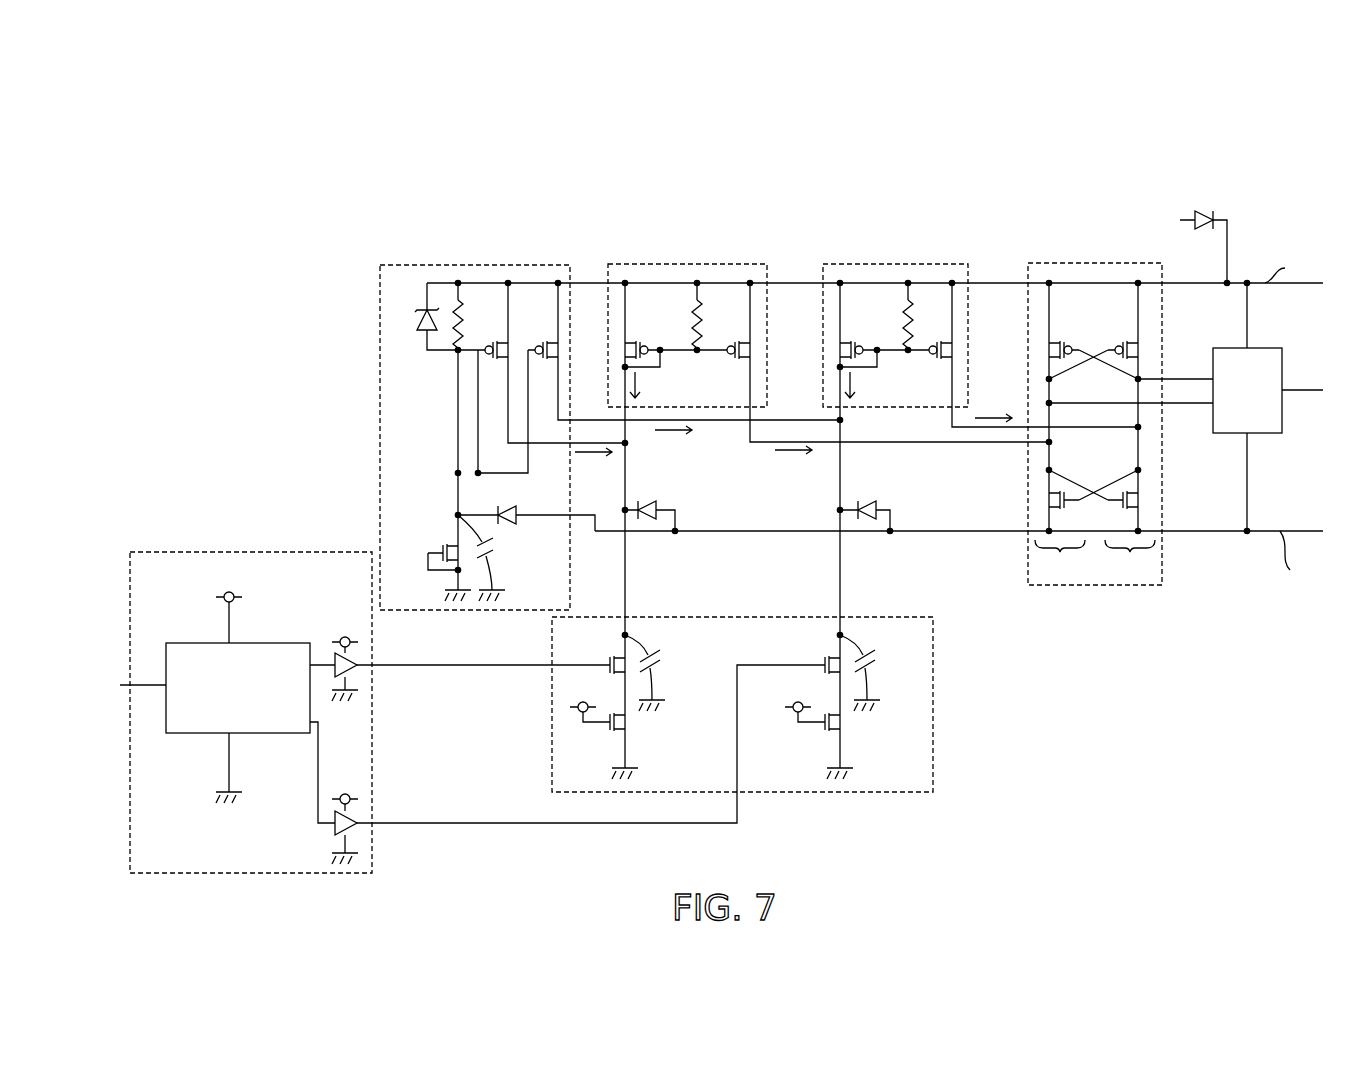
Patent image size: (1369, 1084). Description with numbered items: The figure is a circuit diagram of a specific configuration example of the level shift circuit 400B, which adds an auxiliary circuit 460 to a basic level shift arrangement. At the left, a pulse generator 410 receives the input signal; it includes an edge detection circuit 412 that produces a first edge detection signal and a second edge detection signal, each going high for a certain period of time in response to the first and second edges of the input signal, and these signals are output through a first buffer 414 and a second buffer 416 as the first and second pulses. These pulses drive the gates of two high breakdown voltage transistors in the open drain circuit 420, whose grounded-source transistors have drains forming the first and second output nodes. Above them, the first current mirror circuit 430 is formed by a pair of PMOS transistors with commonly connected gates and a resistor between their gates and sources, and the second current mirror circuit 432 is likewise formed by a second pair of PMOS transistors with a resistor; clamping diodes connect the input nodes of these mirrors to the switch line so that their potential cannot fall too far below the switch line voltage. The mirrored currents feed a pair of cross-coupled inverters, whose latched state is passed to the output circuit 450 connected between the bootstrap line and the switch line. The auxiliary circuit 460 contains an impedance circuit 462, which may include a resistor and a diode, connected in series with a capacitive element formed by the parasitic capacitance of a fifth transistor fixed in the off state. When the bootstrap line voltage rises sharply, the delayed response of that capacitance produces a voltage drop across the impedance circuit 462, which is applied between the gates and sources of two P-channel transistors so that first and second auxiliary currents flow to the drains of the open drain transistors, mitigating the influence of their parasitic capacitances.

The level shift circuit 400B is at (1317, 100).
The pulse generator 410 is at (192, 552).
The edge detection circuit 412 is at (195, 643).
The buffer 414 is at (335, 660).
The buffer 416 is at (335, 830).
The open drain circuit 420 is at (933, 640).
The first current mirror circuit 430 is at (700, 264).
The second current mirror circuit 432 is at (840, 264).
The output circuit 450 is at (1270, 348).
The auxiliary circuit 460 is at (433, 265).
The impedance circuit 462 is at (395, 353).